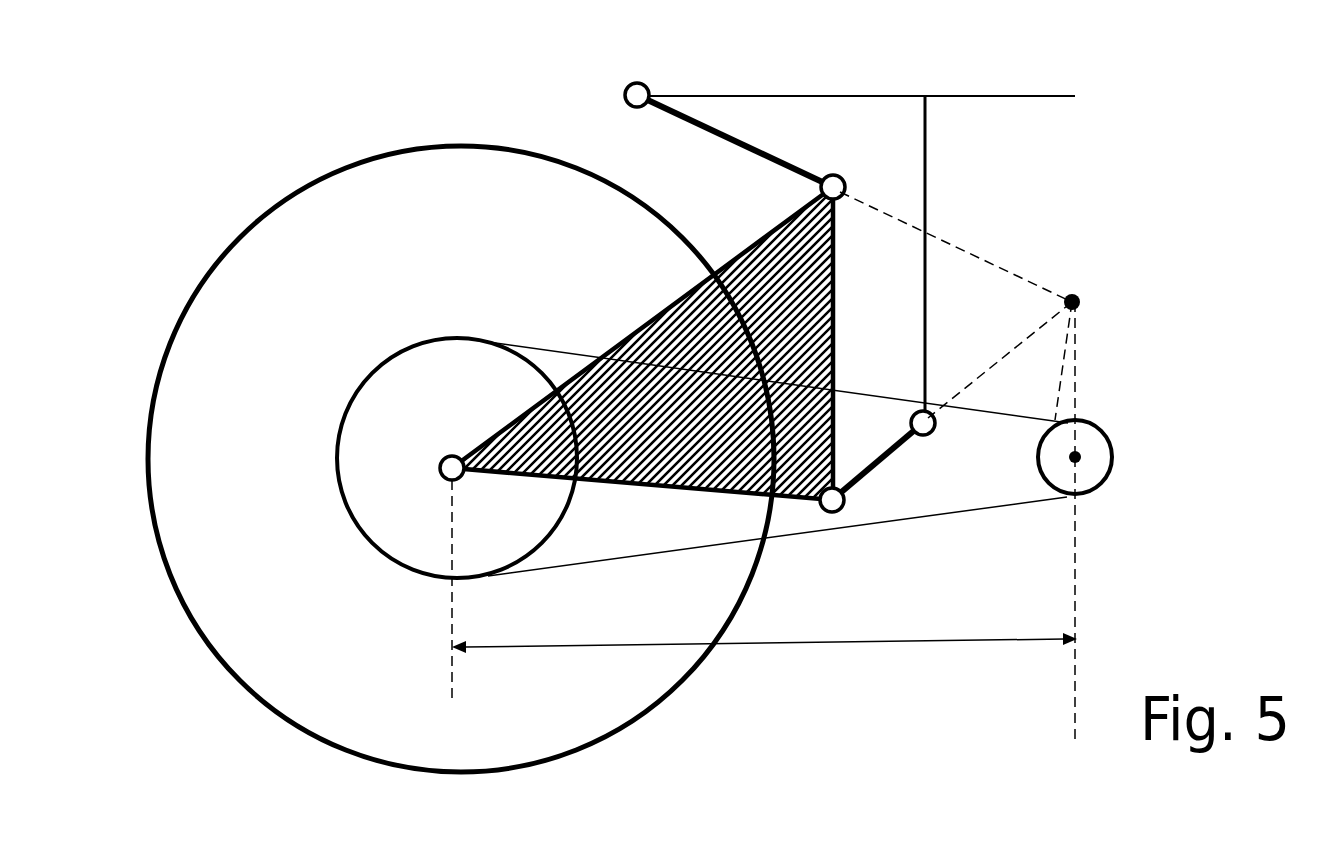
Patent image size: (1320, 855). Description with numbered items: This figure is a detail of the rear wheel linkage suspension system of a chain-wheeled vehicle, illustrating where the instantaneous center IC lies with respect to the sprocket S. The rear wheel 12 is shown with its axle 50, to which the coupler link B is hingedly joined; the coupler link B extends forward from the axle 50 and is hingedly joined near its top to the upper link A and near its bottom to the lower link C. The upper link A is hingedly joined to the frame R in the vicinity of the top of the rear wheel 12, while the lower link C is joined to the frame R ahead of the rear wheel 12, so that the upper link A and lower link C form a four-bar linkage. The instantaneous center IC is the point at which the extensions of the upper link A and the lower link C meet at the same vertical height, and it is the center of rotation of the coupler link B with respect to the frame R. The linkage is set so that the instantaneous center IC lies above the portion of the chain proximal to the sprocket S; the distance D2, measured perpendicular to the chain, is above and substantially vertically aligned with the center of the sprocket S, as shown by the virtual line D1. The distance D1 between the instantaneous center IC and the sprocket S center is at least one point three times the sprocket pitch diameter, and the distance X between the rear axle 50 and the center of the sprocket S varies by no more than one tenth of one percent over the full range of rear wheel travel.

The rear wheel 12 is at (463, 156).
The axle 50 is at (452, 456).
The upper links A is at (747, 150).
The coupler link B is at (833, 326).
The lower links C is at (888, 462).
The frame R is at (1010, 97).
The instantaneous center IC is at (969, 305).
The virtual line / distance between instantaneous center and sprocket center D1 is at (1077, 395).
The distance between instantaneous center and chain D2 is at (1055, 418).
The sprocket S is at (1098, 467).
The distance between rear axle and sprocket center X is at (966, 645).